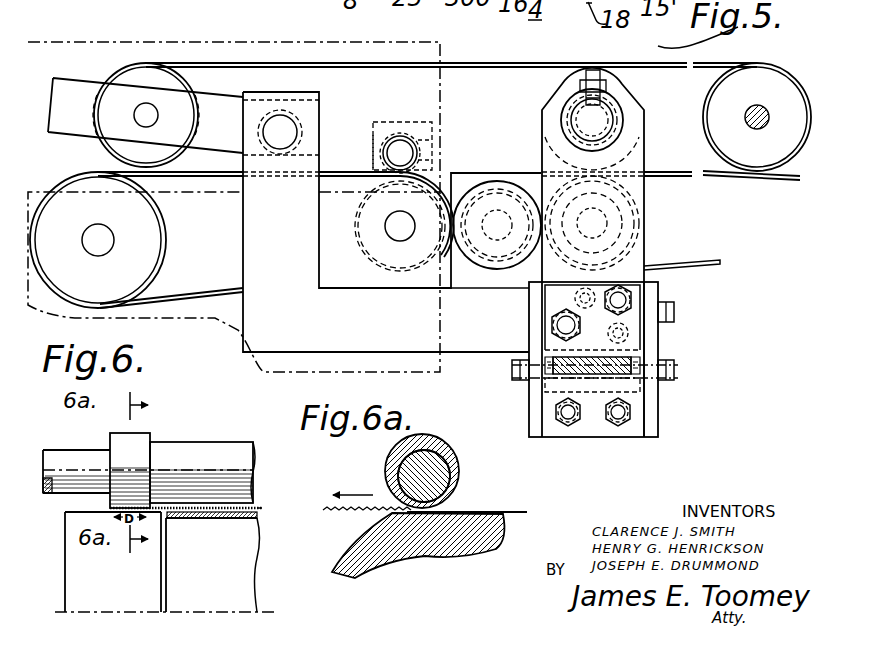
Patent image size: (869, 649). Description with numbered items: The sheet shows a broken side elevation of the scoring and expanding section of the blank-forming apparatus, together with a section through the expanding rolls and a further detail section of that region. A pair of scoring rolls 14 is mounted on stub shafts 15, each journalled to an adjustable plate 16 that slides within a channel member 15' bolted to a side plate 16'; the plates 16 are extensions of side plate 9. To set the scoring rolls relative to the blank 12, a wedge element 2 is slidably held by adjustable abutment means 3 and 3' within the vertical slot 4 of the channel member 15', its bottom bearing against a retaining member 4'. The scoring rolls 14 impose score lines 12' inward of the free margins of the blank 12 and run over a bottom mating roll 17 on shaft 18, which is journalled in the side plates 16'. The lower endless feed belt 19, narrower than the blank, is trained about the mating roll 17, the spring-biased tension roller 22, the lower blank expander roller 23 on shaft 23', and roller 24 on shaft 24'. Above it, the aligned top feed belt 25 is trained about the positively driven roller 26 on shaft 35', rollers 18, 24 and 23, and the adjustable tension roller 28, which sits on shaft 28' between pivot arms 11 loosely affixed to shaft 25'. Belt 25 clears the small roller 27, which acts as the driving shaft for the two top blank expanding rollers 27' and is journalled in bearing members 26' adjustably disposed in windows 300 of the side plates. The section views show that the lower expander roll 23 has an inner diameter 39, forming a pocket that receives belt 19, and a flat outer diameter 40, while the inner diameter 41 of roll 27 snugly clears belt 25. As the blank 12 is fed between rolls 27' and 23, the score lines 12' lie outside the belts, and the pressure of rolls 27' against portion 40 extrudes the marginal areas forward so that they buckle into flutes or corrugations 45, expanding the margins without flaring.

In FIG. 5, the wedge element 2 is at (638, 362).
In FIG. 5, the adjustable abutment means 3 is at (692, 350).
In FIG. 5, the adjustable abutment means 3' is at (579, 385).
In FIG. 5, the slot 4 is at (598, 378).
In FIG. 5, the retaining member 4' is at (592, 424).
In FIG. 5, the side plate 9 is at (228, 42).
In FIG. 5, the pivot arms 11 is at (60, 80).
In FIG. 6, the blank 12 is at (280, 494).
In FIG. 6A, the blank 12 is at (469, 492).
In FIG. 6, the score lines 12' is at (186, 479).
In FIG. 5, the scoring rolls 14 is at (630, 97).
In FIG. 5, the stub shafts 15 is at (623, 120).
In FIG. 5, the channel member 15' is at (684, 370).
In FIG. 5, the adjustable plate 16 is at (625, 188).
In FIG. 5, the side plate 16' is at (490, 336).
In FIG. 5, the mating roll 17 is at (635, 234).
In FIG. 5, the shaft 18 is at (630, 223).
In FIG. 5, the feed belt 19 is at (781, 179).
In FIG. 6, the feed belt 19 is at (264, 515).
In FIG. 5, the tension roller 22 is at (133, 270).
In FIG. 5, the lower blank expander roller 23 is at (387, 234).
In FIG. 6, the lower blank expander roller 23 is at (211, 565).
In FIG. 6A, the lower blank expander roller 23 is at (418, 555).
In FIG. 5, the shaft 23' is at (415, 234).
In FIG. 5, the roller 24 is at (497, 197).
In FIG. 5, the shaft 24' is at (488, 260).
In FIG. 5, the top feed belt 25 is at (427, 141).
In FIG. 6, the top feed belt 25 is at (235, 487).
In FIG. 5, the shaft 25' is at (281, 110).
In FIG. 5, the roller 26 is at (757, 100).
In FIG. 5, the bearing members 26' is at (388, 128).
In FIG. 5, the roller 27 is at (435, 134).
In FIG. 6, the roller 27 is at (155, 456).
In FIG. 6A, the roller 27 is at (458, 476).
In FIG. 5, the top blank expanding rollers 27' is at (406, 125).
In FIG. 6, the top blank expanding rollers 27' is at (157, 452).
In FIG. 6A, the top blank expanding rollers 27' is at (443, 464).
In FIG. 5, the tension roller 28 is at (164, 115).
In FIG. 5, the shaft 28' is at (130, 67).
In FIG. 5, the shaft 35' is at (777, 124).
In FIG. 6, the inner diameter 39 is at (214, 603).
In FIG. 6, the outer diameter 40 is at (115, 603).
In FIG. 6A, the outer diameter 40 is at (510, 562).
In FIG. 6, the inner diameter 41 is at (199, 438).
In FIG. 6A, the flutes or corrugations 45 is at (335, 514).
In FIG. 5, the windows 300 is at (375, 143).